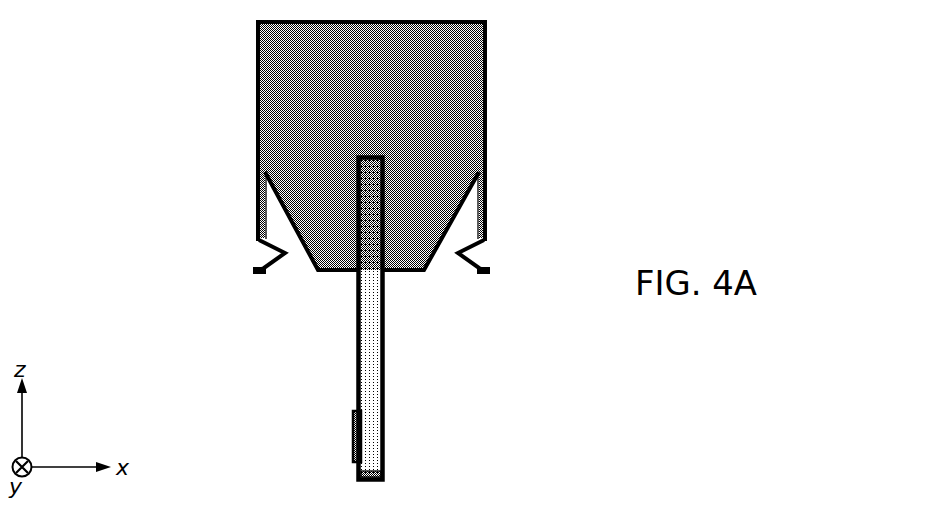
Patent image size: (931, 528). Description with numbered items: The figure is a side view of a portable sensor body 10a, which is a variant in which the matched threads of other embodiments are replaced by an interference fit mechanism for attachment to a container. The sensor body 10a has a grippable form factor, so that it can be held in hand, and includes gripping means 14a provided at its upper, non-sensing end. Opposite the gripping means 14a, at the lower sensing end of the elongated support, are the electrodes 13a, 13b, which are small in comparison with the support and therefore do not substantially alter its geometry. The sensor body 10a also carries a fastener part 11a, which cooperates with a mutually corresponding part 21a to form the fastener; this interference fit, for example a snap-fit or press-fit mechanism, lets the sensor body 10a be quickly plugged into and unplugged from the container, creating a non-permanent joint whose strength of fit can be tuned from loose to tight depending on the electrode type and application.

The sensor body 10a is at (463, 329).
The gripping means 14a is at (487, 80).
The fastener part 11a is at (259, 243).
The corresponding fastener part 21a is at (357, 328).
The electrode 13a is at (352, 428).
The electrode 13b is at (385, 483).